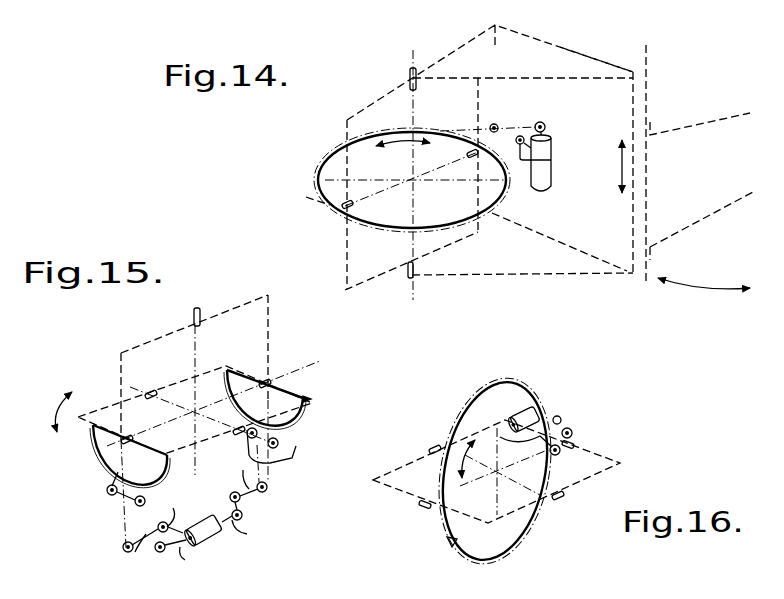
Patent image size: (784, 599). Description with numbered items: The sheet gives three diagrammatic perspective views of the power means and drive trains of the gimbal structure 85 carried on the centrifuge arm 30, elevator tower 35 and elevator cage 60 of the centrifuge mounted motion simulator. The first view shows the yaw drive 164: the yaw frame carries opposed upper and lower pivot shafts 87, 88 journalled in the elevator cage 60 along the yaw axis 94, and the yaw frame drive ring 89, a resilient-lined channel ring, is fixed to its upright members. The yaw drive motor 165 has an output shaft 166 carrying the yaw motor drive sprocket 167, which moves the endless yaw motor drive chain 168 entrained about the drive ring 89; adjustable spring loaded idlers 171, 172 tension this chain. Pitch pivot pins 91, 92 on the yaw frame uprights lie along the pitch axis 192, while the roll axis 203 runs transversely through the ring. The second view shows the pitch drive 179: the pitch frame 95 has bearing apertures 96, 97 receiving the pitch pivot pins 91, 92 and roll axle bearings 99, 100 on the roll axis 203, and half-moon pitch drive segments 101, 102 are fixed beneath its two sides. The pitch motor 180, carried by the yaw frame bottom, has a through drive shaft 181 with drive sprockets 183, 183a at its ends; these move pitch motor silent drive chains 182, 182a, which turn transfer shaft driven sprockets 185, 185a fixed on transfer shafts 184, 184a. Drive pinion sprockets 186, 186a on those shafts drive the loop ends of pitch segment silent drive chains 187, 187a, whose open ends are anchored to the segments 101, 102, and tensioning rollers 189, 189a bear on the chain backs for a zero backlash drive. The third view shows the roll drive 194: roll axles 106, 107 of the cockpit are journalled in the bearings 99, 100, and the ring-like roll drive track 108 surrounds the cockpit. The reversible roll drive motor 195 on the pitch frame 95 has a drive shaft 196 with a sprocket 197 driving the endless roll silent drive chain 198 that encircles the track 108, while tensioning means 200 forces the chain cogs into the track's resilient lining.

In FIG. 14, the centrifuge arm 30 is at (722, 117).
In FIG. 14, the elevator tower 35 is at (650, 73).
In FIG. 14, the elevator cage 60 is at (582, 55).
In FIG. 14, the gimbal structure 85 is at (366, 112).
In FIG. 15, the gimbal structure 85 is at (228, 308).
In FIG. 14, the upper pivot shaft 87 is at (411, 80).
In FIG. 15, the upper pivot shaft 87 is at (195, 314).
In FIG. 14, the lower pivot shaft 88 is at (408, 278).
In FIG. 14, the yaw frame drive ring 89 is at (328, 162).
In FIG. 14, the pitch pivot pin 91 is at (350, 201).
In FIG. 15, the pitch pivot pin 91 is at (128, 442).
In FIG. 14, the pitch pivot pin 92 is at (474, 159).
In FIG. 15, the pitch pivot pin 92 is at (265, 380).
In FIG. 14, the yaw axis 94 is at (410, 250).
In FIG. 15, the yaw axis 94 is at (216, 348).
In FIG. 16, the yaw axis 94 is at (503, 456).
In FIG. 15, the pitch frame 95 is at (110, 405).
In FIG. 16, the pitch frame 95 is at (390, 485).
In FIG. 16, the bearing aperture 96 is at (425, 509).
In FIG. 16, the bearing aperture 97 is at (576, 444).
In FIG. 15, the roll axle bearing 99 is at (237, 434).
In FIG. 15, the roll axle bearing 100 is at (150, 390).
In FIG. 15, the pitch drive segment 101 is at (94, 447).
In FIG. 15, the pitch drive segment 102 is at (290, 395).
In FIG. 16, the roll axle 106 is at (558, 500).
In FIG. 16, the roll axle 107 is at (443, 436).
In FIG. 16, the roll drive track 108 is at (449, 542).
In FIG. 14, the yaw drive 164 is at (548, 118).
In FIG. 14, the yaw drive motor 165 is at (550, 183).
In FIG. 14, the output shaft 166 is at (548, 136).
In FIG. 14, the yaw motor drive sprocket 167 is at (546, 127).
In FIG. 14, the yaw motor drive chain 168 is at (523, 116).
In FIG. 14, the tensioning spring loaded idler 171 is at (552, 160).
In FIG. 14, the tensioning spring loaded idler 172 is at (495, 123).
In FIG. 15, the pitch drive 179 is at (232, 536).
In FIG. 15, the pitch motor 180 is at (203, 524).
In FIG. 15, the through drive shaft 181 is at (182, 552).
In FIG. 15, the pitch motor silent drive chain 182 is at (161, 510).
In FIG. 15, the pitch motor drive sprocket 183 is at (160, 553).
In FIG. 15, the transfer shaft 184 is at (145, 535).
In FIG. 15, the transfer shaft driven sprocket 185 is at (158, 530).
In FIG. 15, the transfer shaft drive pinion sprocket 186 is at (123, 550).
In FIG. 15, the pitch segment silent drive chain 187 is at (103, 467).
In FIG. 15, the tensioning roller 189 is at (107, 492).
In FIG. 15, the pitch motor silent drive chain 182a is at (241, 498).
In FIG. 15, the pitch motor drive sprocket 183a is at (243, 515).
In FIG. 15, the transfer shaft 184a is at (238, 473).
In FIG. 15, the transfer shaft driven sprocket 185a is at (230, 494).
In FIG. 15, the transfer shaft drive pinion sprocket 186a is at (268, 487).
In FIG. 15, the pitch segment silent drive chain 187a is at (306, 407).
In FIG. 15, the tensioning roller 189a is at (279, 444).
In FIG. 14, the pitch axis 192 is at (373, 193).
In FIG. 15, the pitch axis 192 is at (153, 414).
In FIG. 16, the pitch axis 192 is at (464, 487).
In FIG. 16, the roll drive 194 is at (578, 413).
In FIG. 16, the roll drive motor 195 is at (523, 411).
In FIG. 16, the drive shaft 196 is at (521, 442).
In FIG. 16, the sprocket 197 is at (573, 431).
In FIG. 16, the roll silent drive chain 198 is at (549, 404).
In FIG. 16, the tensioning means 200 is at (560, 416).
In FIG. 14, the roll axis 203 is at (379, 172).
In FIG. 15, the roll axis 203 is at (160, 411).
In FIG. 16, the roll axis 203 is at (518, 483).